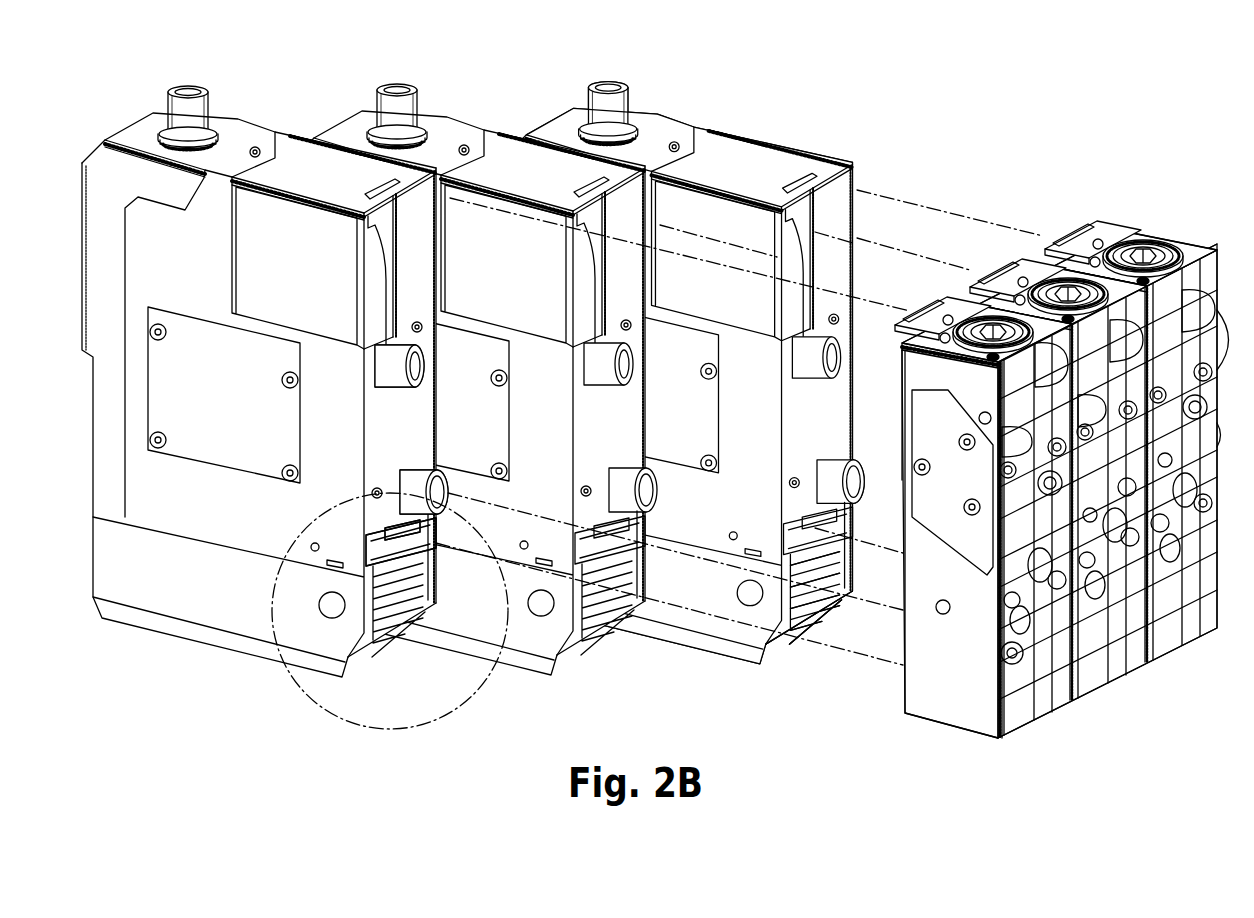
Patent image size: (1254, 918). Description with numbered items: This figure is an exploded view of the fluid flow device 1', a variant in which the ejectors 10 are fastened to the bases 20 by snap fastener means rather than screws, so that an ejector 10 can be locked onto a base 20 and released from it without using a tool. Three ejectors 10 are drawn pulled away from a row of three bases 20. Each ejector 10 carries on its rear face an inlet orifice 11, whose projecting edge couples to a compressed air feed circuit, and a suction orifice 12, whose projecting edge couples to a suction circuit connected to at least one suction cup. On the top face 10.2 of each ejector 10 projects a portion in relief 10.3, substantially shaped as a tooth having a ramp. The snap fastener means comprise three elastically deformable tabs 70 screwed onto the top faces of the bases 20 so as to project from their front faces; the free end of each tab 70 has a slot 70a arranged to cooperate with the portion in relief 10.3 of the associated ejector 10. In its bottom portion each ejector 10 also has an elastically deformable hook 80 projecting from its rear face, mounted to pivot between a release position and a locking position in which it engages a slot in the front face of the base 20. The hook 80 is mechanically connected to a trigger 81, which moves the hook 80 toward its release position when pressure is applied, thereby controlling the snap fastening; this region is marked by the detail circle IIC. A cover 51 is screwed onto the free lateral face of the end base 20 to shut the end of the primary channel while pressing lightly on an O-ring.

The ejector 10 is at (242, 108).
The top face 10.2 is at (743, 156).
The portion in relief 10.3 is at (818, 170).
The inlet orifice 11 is at (390, 380).
The suction orifice 12 is at (408, 480).
The hook 80 is at (385, 527).
The trigger 81 is at (787, 652).
The detail view IIC is at (297, 690).
The fluid flow device 1' is at (1074, 420).
The base 20 is at (1044, 726).
The elastically deformable tab 70 is at (1128, 231).
The slot 70a is at (1070, 226).
The cover 51 is at (974, 550).